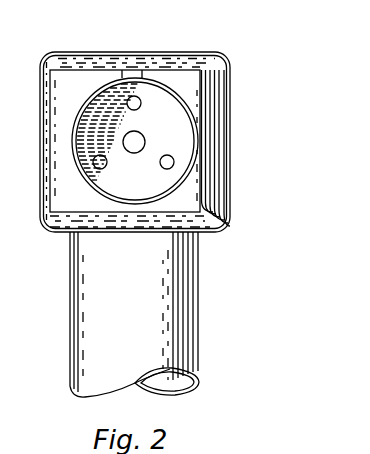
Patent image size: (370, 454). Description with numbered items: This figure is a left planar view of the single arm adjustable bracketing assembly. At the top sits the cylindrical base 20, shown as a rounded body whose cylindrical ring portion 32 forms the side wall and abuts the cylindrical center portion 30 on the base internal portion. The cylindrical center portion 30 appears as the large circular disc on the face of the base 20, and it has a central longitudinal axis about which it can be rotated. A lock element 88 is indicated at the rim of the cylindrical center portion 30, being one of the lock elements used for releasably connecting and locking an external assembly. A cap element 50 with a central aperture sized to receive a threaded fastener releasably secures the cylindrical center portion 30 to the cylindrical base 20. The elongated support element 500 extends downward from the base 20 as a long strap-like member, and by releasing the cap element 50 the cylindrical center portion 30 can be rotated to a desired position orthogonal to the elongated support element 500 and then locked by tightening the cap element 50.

The cap element 50 is at (161, 145).
The cylindrical center portion 30 is at (177, 141).
The lock element 88 is at (185, 133).
The cylindrical ring portion 32 is at (228, 185).
The cylindrical base 20 is at (205, 218).
The elongated support element 500 is at (190, 316).